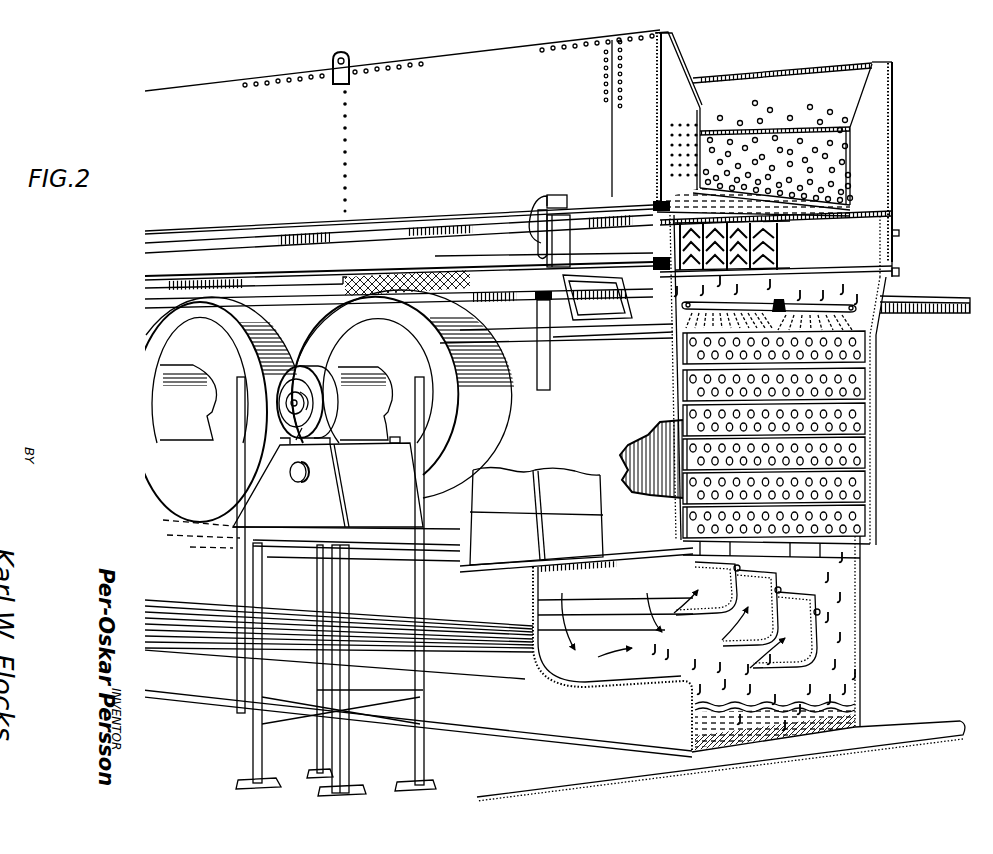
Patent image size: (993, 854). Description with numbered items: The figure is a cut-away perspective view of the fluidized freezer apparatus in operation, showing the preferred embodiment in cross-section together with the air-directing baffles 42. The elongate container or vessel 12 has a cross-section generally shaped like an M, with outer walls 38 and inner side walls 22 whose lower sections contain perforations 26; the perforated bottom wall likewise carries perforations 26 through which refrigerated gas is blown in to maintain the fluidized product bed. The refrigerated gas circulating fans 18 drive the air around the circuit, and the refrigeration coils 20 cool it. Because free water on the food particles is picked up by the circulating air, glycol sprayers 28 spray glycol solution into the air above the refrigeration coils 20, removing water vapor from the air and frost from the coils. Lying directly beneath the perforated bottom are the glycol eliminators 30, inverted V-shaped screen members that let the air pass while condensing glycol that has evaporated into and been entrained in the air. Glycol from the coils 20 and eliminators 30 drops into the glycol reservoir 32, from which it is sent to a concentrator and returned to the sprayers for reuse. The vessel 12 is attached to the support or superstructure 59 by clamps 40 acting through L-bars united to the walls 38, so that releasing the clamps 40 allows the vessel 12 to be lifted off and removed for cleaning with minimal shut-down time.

The container or vessel 12 is at (207, 104).
The refrigerated gas circulating fans 18 is at (196, 348).
The refrigeration coils 20 is at (858, 358).
The side walls (inner walls) 22 is at (657, 118).
The perforations 26 is at (670, 146).
The glycol sprayers 28 is at (752, 300).
The glycol eliminators 30 is at (760, 233).
The glycol reservoir 32 is at (850, 716).
The outer walls 38 is at (655, 93).
The clamps (clamping devices) 40 is at (527, 208).
The air-directing baffles 42 is at (655, 600).
The support or superstructure 59 is at (642, 365).